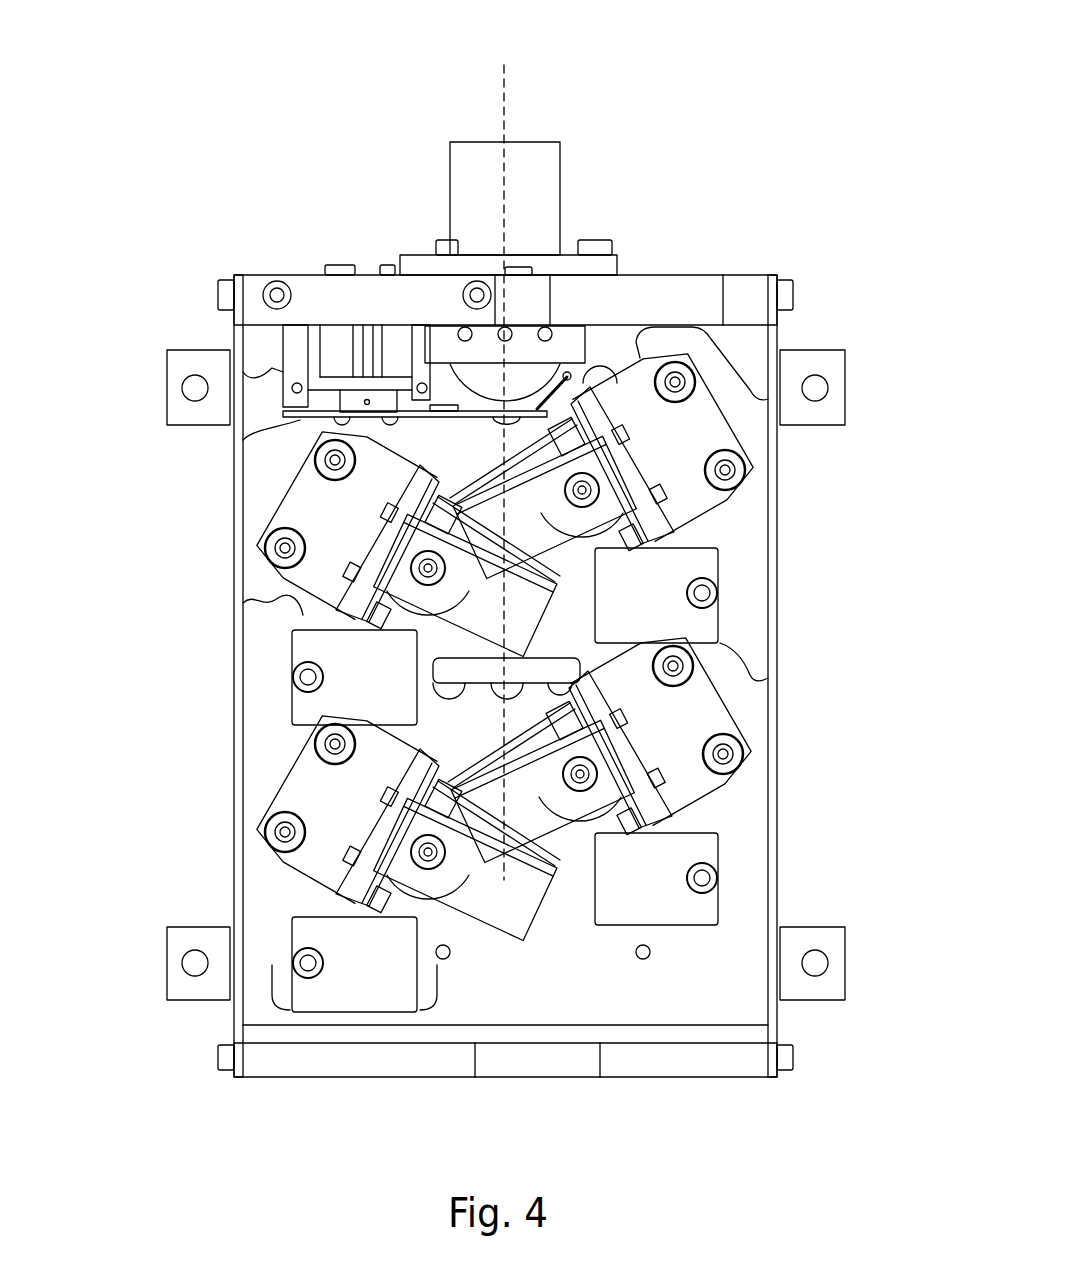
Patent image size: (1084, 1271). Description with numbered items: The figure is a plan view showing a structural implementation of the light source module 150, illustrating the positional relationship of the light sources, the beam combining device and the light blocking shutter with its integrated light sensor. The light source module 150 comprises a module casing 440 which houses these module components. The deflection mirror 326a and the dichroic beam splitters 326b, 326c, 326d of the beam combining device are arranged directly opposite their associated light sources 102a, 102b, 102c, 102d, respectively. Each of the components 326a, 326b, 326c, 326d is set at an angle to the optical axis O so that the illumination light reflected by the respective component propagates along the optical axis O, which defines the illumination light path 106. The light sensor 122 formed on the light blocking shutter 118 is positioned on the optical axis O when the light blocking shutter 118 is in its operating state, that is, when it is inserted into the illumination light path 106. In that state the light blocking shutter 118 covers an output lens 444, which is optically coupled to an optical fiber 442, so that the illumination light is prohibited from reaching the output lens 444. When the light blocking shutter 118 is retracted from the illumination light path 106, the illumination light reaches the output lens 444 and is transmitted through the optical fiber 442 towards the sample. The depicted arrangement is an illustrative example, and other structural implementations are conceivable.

The light source module 150 is at (499, 583).
The illumination light path 106 is at (505, 115).
The module casing 440 is at (778, 613).
The optical fiber 442 is at (460, 172).
The output lens 444 is at (478, 370).
The light sensor 122 is at (552, 435).
The light blocking shutter 118 is at (283, 417).
The light source 102a is at (460, 898).
The light source 102b is at (527, 787).
The light source 102c is at (430, 600).
The light source 102d is at (552, 527).
The deflection mirror 326a is at (520, 913).
The dichroic beam splitter 326b is at (350, 875).
The dichroic beam splitter 326c is at (593, 737).
The dichroic beam splitter 326d is at (447, 543).